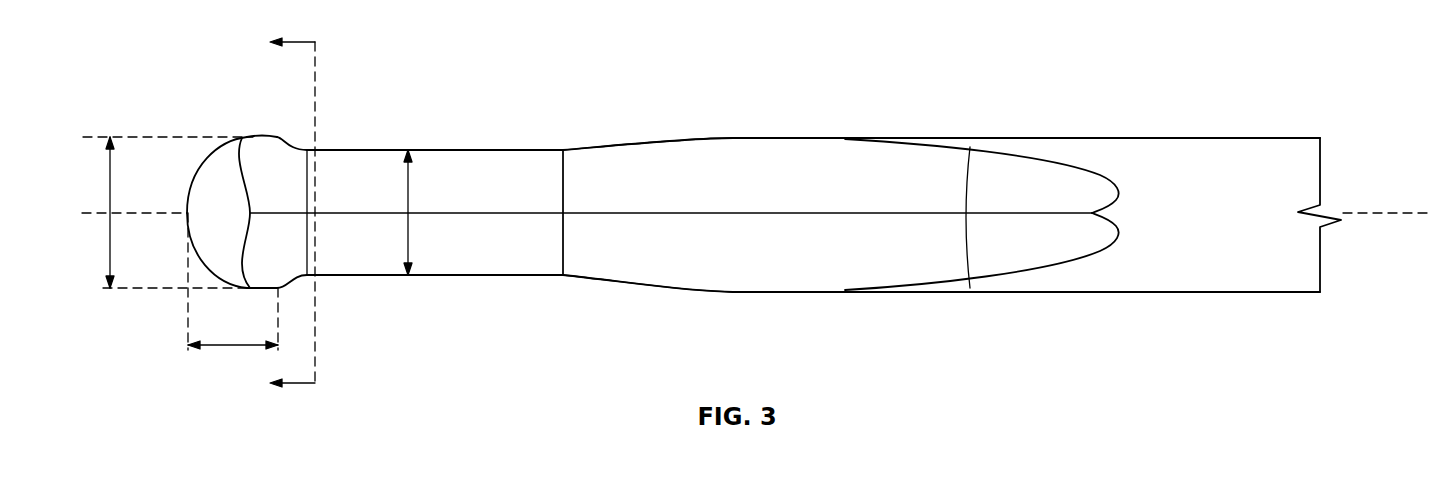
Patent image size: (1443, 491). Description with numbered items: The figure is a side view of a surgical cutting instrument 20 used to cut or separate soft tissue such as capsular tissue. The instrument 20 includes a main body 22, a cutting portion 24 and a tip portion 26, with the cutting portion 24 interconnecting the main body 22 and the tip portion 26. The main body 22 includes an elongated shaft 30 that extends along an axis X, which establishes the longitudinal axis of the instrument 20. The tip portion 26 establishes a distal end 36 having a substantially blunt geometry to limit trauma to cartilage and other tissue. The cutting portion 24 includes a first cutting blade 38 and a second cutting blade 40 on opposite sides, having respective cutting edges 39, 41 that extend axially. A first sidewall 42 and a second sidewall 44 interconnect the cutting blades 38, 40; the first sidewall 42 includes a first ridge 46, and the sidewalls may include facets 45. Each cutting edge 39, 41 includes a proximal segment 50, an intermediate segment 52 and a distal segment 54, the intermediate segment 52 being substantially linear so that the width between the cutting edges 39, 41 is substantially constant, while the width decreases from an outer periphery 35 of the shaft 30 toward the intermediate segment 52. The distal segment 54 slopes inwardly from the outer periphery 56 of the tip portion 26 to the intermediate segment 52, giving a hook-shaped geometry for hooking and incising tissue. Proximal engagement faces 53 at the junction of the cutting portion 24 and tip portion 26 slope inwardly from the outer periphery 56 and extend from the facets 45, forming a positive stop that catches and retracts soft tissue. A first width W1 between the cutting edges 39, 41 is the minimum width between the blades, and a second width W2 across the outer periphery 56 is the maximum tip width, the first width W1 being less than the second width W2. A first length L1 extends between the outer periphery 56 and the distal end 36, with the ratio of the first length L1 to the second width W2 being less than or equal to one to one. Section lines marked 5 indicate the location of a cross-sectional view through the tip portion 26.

The surgical instrument 20 is at (143, 70).
The main body 22 is at (1187, 130).
The cutting portion 24 is at (552, 51).
The tip portion 26 is at (193, 122).
The elongated shaft 30 is at (1313, 172).
The outer periphery of the shaft 35 is at (978, 138).
The distal end 36 is at (187, 218).
The first cutting blade 38 is at (533, 148).
The cutting edge of the first cutting blade 39 is at (533, 148).
The second cutting blade 40 is at (523, 277).
The cutting edge of the second cutting blade 41 is at (523, 277).
The first sidewall 42 is at (452, 158).
The second sidewall 44 is at (450, 260).
The facets 45 is at (348, 167).
The first ridge 46 is at (608, 213).
The proximal segment 50 is at (658, 142).
The intermediate segment 52 is at (395, 148).
The proximal engagement faces 53 is at (295, 152).
The distal segment 54 is at (280, 170).
The outer periphery of the tip portion 56 is at (273, 137).
The axis X is at (1385, 215).
The first width W1 is at (412, 197).
The second width W2 is at (107, 190).
The first length L1 is at (225, 350).
The section line 5 is at (282, 217).